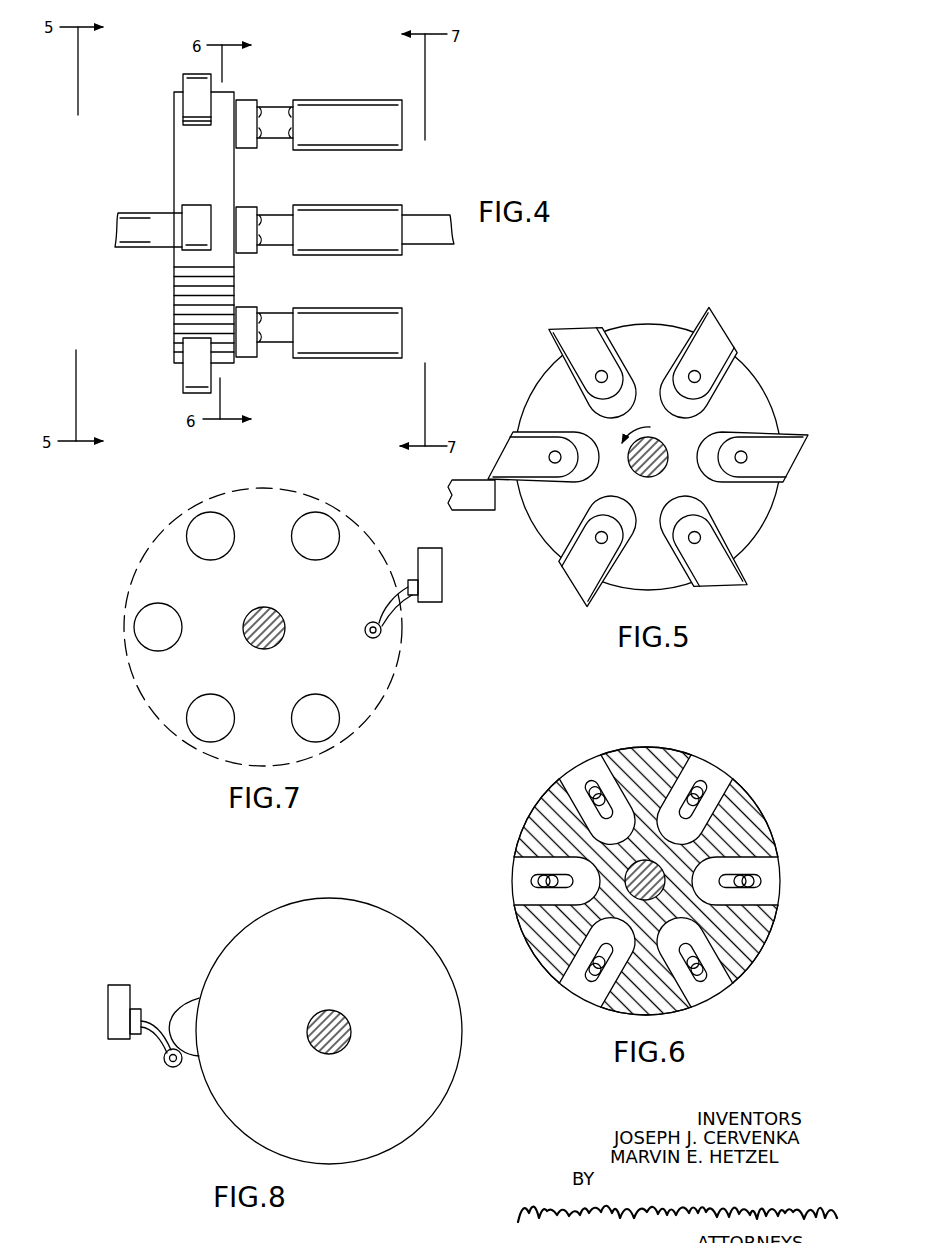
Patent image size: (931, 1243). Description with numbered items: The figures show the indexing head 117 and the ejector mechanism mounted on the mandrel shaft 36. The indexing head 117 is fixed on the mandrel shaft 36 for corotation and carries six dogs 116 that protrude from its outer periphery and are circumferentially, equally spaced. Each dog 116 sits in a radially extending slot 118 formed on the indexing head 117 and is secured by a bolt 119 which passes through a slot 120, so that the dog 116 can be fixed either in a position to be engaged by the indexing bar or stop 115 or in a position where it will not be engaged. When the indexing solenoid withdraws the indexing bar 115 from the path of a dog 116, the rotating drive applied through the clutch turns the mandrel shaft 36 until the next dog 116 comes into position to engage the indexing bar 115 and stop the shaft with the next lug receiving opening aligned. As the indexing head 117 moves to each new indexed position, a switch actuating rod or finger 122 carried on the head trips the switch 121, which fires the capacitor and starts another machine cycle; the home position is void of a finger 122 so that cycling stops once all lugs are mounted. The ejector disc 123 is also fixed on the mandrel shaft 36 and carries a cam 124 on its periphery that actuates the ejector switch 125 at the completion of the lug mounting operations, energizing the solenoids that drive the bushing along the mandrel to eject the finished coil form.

In FIG. 4, the mandrel shaft 36 is at (135, 213).
In FIG. 5, the mandrel shaft 36 is at (664, 447).
In FIG. 7, the mandrel shaft 36 is at (269, 641).
In FIG. 6, the mandrel shaft 36 is at (661, 866).
In FIG. 8, the mandrel shaft 36 is at (348, 1043).
In FIG. 5, the indexing bar or stop 115 is at (470, 506).
In FIG. 4, the dog 116 is at (195, 73).
In FIG. 5, the dog 116 is at (727, 338).
In FIG. 4, the indexing head 117 is at (238, 89).
In FIG. 5, the indexing head 117 is at (783, 410).
In FIG. 7, the indexing head 117 is at (376, 718).
In FIG. 6, the indexing head 117 is at (755, 792).
In FIG. 5, the radially extending slot 118 is at (665, 392).
In FIG. 5, the bolt 119 is at (695, 369).
In FIG. 6, the slot 120 is at (597, 786).
In FIG. 7, the switch 121 is at (427, 560).
In FIG. 4, the switch actuating rod 122 is at (347, 110).
In FIG. 7, the switch actuating rod 122 is at (320, 532).
In FIG. 8, the ejector disc 123 is at (398, 927).
In FIG. 8, the cam 124 is at (186, 1016).
In FIG. 8, the ejector switch 125 is at (122, 989).